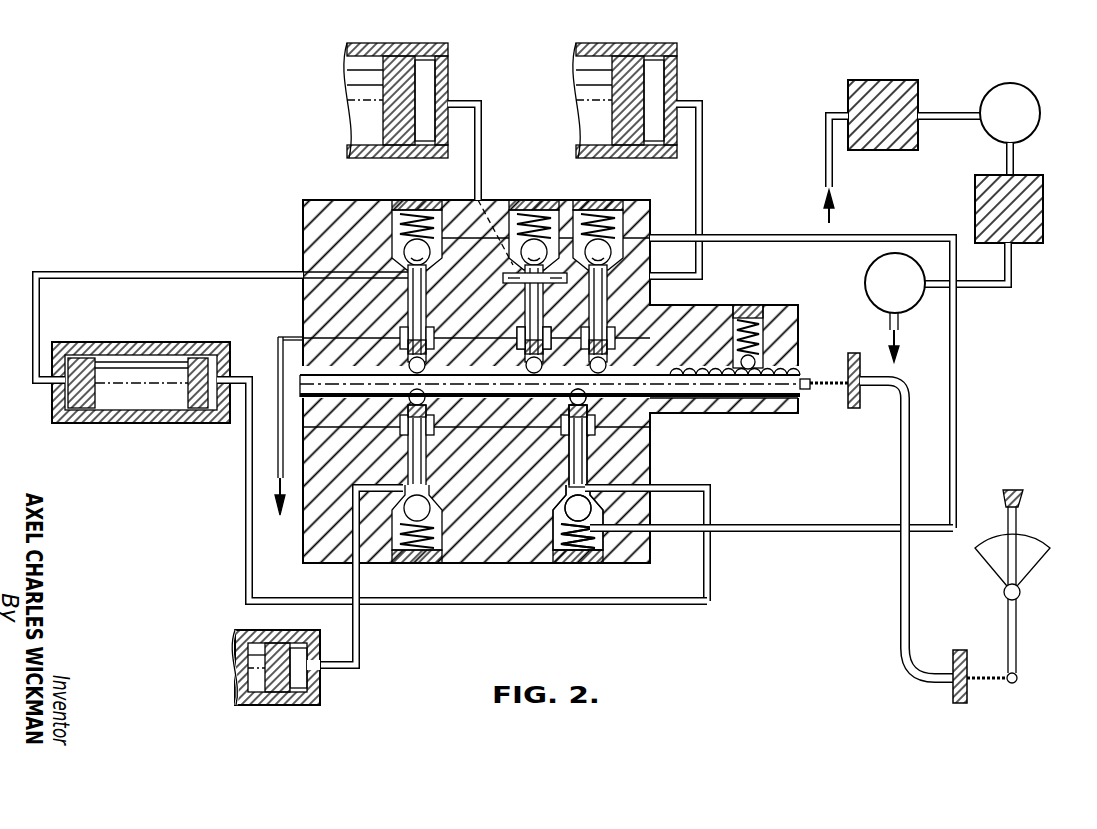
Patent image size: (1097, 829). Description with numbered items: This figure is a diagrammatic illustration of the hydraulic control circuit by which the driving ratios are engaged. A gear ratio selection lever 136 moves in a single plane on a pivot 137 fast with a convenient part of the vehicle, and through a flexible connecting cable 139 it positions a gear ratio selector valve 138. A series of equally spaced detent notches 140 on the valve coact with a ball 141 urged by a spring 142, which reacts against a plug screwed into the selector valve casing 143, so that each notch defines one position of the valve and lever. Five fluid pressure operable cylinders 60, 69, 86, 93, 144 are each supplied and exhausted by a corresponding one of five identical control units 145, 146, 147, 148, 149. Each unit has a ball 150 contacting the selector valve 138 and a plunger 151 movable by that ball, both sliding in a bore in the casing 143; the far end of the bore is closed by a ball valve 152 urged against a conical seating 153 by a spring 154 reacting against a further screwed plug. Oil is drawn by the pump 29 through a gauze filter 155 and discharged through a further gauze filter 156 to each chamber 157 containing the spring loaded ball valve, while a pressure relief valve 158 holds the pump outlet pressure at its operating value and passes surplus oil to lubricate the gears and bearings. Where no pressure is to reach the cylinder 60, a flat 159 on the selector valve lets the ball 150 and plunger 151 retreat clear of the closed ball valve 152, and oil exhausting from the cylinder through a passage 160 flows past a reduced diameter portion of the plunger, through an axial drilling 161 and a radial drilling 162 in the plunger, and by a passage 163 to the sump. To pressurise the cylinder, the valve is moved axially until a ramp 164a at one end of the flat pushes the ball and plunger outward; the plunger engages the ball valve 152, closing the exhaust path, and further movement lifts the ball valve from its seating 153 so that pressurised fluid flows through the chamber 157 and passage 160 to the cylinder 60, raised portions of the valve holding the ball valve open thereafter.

The fluid pressure operable cylinder 60 is at (430, 95).
The passage 160 is at (482, 114).
The fluid pressure operable cylinder 69 is at (660, 95).
The gauze filter 155 is at (900, 80).
The pump 29 is at (1022, 95).
The gauze filter 156 is at (975, 197).
The control unit 147 is at (398, 208).
The radial drilling 162 is at (523, 328).
The control unit 145 is at (517, 218).
The axial drilling 161 is at (548, 276).
The control unit 146 is at (622, 215).
The selector valve casing 143 is at (770, 306).
The spring 142 is at (765, 330).
The ball 141 is at (758, 356).
The passage 163 is at (290, 335).
The pressure relief valve 158 is at (905, 300).
The fluid pressure operable cylinder 86 is at (78, 403).
The fluid pressure operable cylinder 93 is at (195, 403).
The ramp 164a is at (645, 393).
The gear ratio selector valve 138 is at (765, 390).
The detent notch 140 is at (800, 392).
The flat 159 is at (598, 393).
The ball 150 is at (590, 403).
The plunger 151 is at (590, 462).
The flexible connecting cable 139 is at (900, 452).
The control unit 149 is at (425, 560).
The conical seating 153 is at (548, 525).
The spring 154 is at (573, 553).
The control unit 148 is at (600, 552).
The chamber 157 is at (592, 533).
The ball valve 152 is at (552, 525).
The fluid pressure operable cylinder 144 is at (305, 685).
The gear ratio selection lever 136 is at (1018, 520).
The pivot 137 is at (1005, 596).